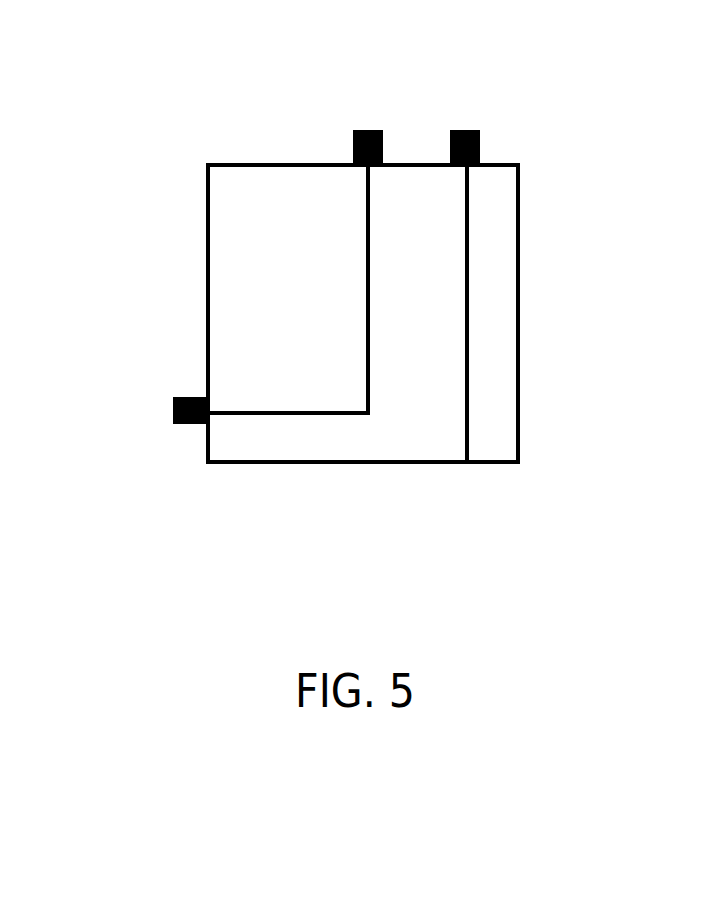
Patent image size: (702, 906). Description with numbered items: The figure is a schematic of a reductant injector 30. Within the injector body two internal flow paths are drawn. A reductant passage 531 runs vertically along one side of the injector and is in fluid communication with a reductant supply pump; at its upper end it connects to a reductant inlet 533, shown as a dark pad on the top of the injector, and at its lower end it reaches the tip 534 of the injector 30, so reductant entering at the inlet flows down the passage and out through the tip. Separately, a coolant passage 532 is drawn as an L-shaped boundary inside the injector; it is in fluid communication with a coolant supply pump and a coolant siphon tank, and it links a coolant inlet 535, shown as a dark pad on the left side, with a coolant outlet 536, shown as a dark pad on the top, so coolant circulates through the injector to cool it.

The reductant injector 30 is at (273, 235).
The reductant passage 531 is at (467, 343).
The coolant passage 532 is at (367, 313).
The reductant inlet 533 is at (475, 128).
The tip 534 is at (468, 463).
The coolant inlet 535 is at (177, 423).
The coolant outlet 536 is at (362, 128).